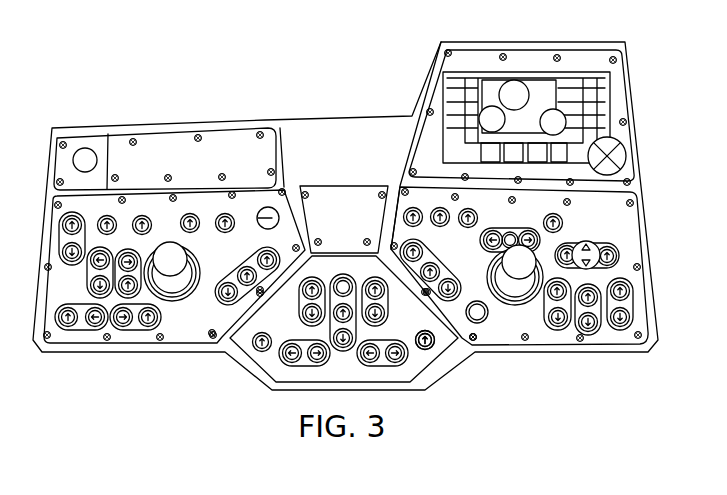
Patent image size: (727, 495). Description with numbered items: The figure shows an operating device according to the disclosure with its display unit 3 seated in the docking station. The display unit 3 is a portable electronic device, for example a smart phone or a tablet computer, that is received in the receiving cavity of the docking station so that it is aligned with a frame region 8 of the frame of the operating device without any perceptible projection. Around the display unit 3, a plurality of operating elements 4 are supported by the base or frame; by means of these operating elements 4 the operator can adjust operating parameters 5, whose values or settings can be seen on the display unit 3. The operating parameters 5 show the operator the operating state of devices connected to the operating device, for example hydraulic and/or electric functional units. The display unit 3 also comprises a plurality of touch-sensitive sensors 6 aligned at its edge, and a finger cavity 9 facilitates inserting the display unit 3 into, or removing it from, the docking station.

The display unit 3 is at (437, 99).
The operating elements 4 is at (191, 212).
The operating parameters 5 is at (516, 80).
The touch-sensitive sensors 6 is at (478, 72).
The frame region 8 is at (618, 93).
The finger cavity 9 is at (556, 73).